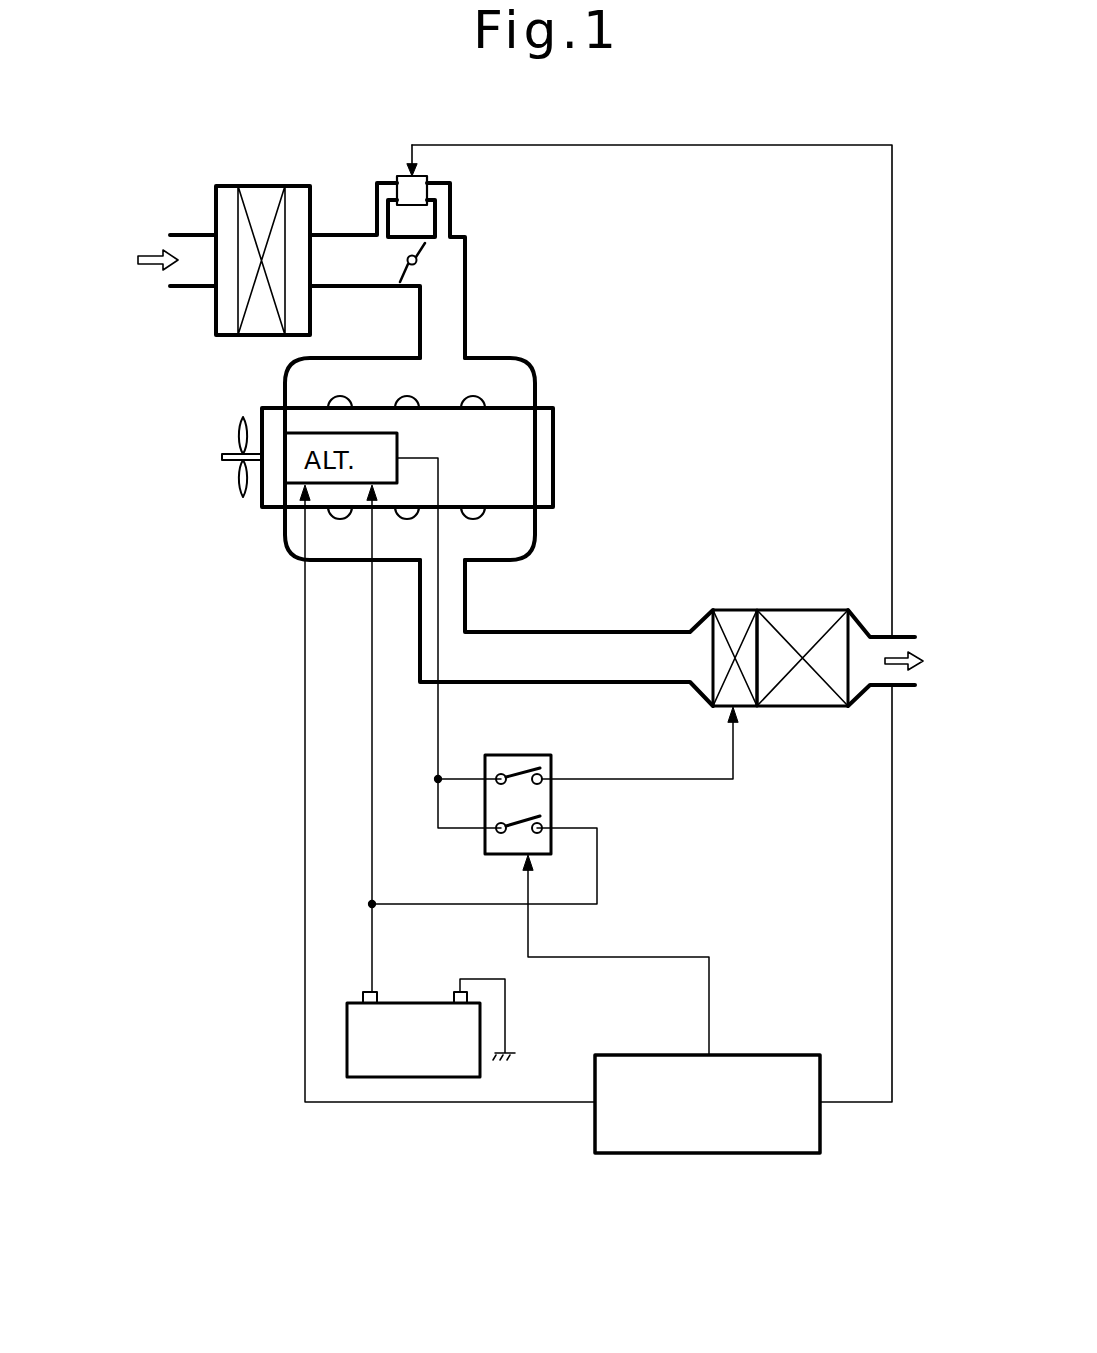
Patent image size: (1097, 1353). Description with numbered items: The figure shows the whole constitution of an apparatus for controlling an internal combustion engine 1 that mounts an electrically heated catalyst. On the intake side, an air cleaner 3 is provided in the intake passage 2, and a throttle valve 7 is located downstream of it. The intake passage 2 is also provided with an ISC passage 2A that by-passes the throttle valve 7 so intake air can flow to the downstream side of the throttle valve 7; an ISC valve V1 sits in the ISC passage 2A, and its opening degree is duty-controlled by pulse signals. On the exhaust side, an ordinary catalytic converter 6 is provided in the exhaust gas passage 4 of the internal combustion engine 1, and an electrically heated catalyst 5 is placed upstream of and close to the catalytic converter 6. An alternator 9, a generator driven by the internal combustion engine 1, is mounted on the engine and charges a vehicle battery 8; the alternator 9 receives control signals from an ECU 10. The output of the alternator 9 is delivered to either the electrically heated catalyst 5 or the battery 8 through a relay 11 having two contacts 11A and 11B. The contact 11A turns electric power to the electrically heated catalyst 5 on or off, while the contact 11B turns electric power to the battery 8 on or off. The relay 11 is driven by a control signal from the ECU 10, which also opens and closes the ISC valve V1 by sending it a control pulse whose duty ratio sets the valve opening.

The internal combustion engine 1 is at (553, 473).
The intake passage 2 is at (468, 300).
The ISC passage 2A is at (452, 212).
The air cleaner 3 is at (272, 192).
The exhaust gas passage 4 is at (552, 632).
The electrically heated catalyst 5 is at (743, 612).
The catalytic converter 6 is at (822, 612).
The throttle valve 7 is at (418, 262).
The battery 8 is at (427, 1013).
The alternator 9 is at (292, 458).
The ECU 10 is at (778, 1062).
The relay 11 is at (565, 777).
The contact 11A is at (540, 770).
The contact 11B is at (540, 818).
The ISC valve V1 is at (428, 184).